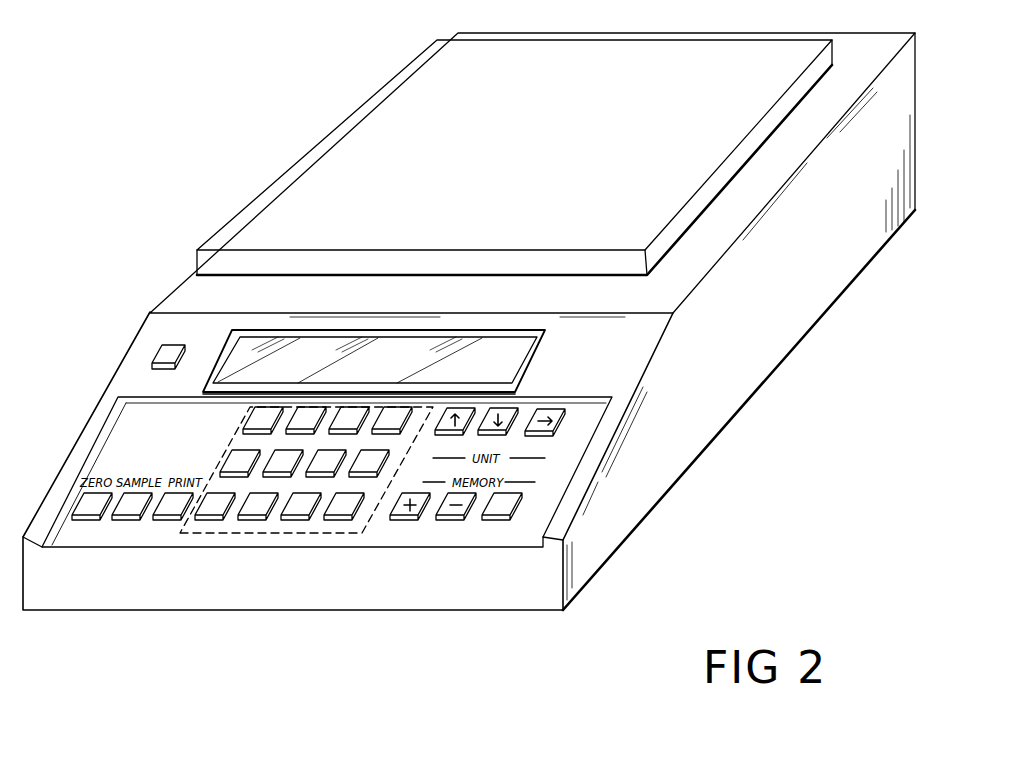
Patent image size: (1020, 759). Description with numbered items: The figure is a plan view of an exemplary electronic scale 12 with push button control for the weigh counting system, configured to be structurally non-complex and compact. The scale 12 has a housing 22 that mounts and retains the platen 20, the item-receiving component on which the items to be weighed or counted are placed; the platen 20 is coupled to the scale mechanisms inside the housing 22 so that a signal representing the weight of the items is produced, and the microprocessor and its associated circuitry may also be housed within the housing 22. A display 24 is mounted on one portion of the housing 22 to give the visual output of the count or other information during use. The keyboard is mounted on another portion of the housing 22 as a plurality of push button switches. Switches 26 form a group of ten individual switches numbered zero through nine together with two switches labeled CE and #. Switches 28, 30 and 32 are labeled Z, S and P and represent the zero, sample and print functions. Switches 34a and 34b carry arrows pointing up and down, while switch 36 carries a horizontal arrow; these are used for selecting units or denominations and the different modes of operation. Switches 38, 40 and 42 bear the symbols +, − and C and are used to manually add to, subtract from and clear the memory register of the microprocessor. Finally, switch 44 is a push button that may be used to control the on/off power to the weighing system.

The scale 12 is at (788, 398).
The platen 20 is at (312, 160).
The housing 22 is at (835, 303).
The display 24 is at (407, 350).
The switches 26 is at (308, 530).
The switch 28 is at (82, 523).
The switch 30 is at (123, 523).
The switch 32 is at (165, 523).
The switch 34a is at (463, 410).
The switch 34b is at (513, 410).
The switch 36 is at (568, 422).
The switch 38 is at (405, 527).
The switch 40 is at (453, 527).
The switch 42 is at (497, 525).
The switch 44 is at (160, 353).